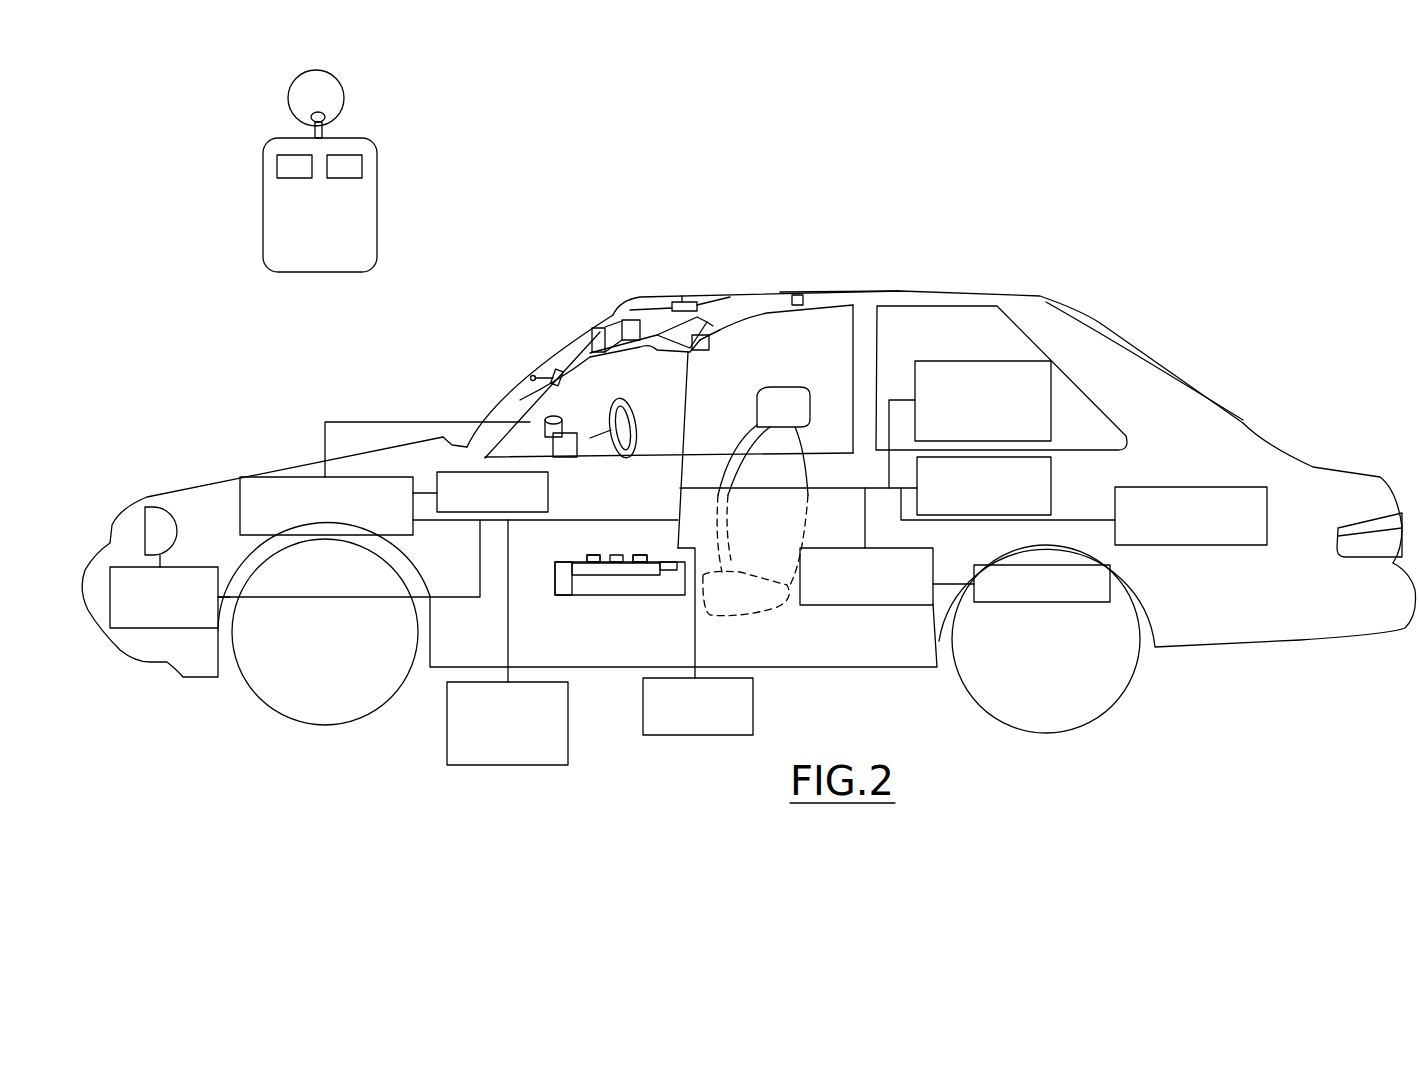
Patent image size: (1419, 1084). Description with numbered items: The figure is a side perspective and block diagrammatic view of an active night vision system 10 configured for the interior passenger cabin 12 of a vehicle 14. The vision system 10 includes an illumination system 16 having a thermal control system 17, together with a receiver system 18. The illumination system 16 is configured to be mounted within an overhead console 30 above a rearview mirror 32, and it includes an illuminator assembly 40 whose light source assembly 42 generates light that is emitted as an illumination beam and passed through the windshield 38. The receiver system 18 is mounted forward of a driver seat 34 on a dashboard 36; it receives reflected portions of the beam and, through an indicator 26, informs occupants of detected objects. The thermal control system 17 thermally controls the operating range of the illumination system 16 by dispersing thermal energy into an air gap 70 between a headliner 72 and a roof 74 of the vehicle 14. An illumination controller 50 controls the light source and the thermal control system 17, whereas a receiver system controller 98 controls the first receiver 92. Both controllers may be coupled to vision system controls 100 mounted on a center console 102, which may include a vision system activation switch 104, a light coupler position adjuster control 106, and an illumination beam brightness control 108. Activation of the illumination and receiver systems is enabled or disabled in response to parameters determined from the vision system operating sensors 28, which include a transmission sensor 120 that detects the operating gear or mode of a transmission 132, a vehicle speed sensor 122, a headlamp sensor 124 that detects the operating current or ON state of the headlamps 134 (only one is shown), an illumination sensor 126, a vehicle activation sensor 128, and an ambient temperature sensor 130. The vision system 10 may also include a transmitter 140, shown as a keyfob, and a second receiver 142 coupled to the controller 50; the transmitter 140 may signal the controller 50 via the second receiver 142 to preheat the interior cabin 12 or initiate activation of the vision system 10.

The active night vision system 10 is at (586, 237).
The interior passenger cabin 12 is at (798, 655).
The vehicle 14 is at (940, 293).
The illumination system 16 is at (768, 323).
The thermal control system 17 is at (726, 347).
The receiver system 18 is at (359, 395).
The indicator 26 is at (458, 518).
The vision system operating sensors 28 is at (195, 562).
The overhead console 30 is at (768, 313).
The rearview mirror 32 is at (573, 378).
The driver seat 34 is at (817, 427).
The dashboard 36 is at (572, 432).
The windshield 38 is at (513, 380).
The illuminator assembly 40 is at (698, 298).
The light source assembly 42 is at (613, 312).
The illumination controller 50 is at (699, 350).
The air gap 70 is at (967, 304).
The headliner 72 is at (939, 307).
The roof 74 is at (862, 292).
The first receiver 92 is at (557, 457).
The receiver system controller 98 is at (285, 475).
The vision system controls 100 is at (632, 572).
The center console 102 is at (554, 576).
The vision system activation switch 104 is at (587, 557).
The light coupler position adjuster control 106 is at (614, 555).
The illumination beam brightness control 108 is at (642, 553).
The transmission sensor 120 is at (908, 607).
The vehicle speed sensor 122 is at (1227, 485).
The headlamp sensor 124 is at (170, 628).
The illumination sensor 126 is at (1051, 495).
The vehicle activation sensor 128 is at (582, 690).
The ambient temperature sensor 130 is at (1051, 377).
The transmission 132 is at (1039, 604).
The headlamps 134 is at (165, 513).
The transmitter 140 is at (378, 183).
The second receiver 142 is at (755, 712).